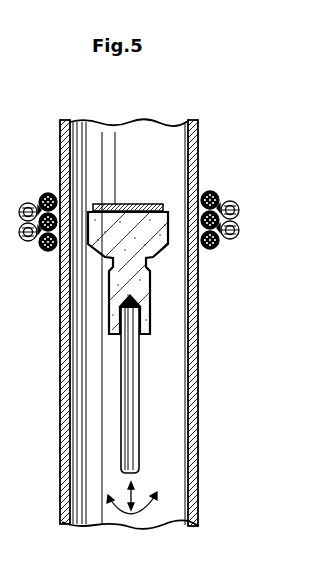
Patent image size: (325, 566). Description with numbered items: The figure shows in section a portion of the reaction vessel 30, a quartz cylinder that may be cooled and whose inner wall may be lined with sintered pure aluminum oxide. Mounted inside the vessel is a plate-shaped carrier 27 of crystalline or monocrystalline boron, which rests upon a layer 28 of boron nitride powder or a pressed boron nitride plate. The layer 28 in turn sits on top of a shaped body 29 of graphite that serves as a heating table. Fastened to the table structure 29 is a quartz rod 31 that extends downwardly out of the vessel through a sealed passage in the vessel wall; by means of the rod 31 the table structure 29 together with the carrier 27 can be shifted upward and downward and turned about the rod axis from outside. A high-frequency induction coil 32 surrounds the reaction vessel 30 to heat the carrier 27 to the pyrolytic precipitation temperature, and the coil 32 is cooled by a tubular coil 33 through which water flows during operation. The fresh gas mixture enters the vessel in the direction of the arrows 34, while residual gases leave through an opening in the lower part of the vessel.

The plate-shaped carrier 27 is at (143, 204).
The layer of boron nitride 28 is at (83, 323).
The shaped body of graphite 29 is at (148, 250).
The reaction vessel 30 is at (200, 355).
The quartz rod 31 is at (140, 368).
The high-frequency induction coil 32 is at (226, 191).
The tubular coil 33 is at (238, 220).
The arrows 34 is at (170, 174).